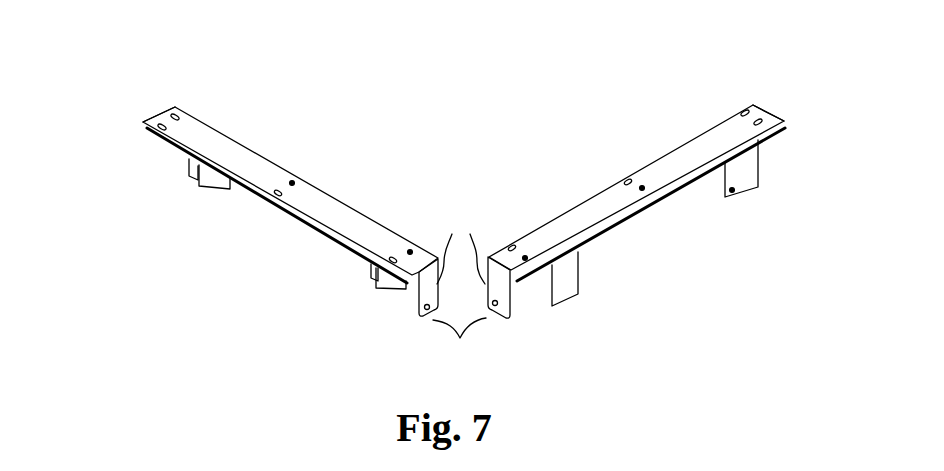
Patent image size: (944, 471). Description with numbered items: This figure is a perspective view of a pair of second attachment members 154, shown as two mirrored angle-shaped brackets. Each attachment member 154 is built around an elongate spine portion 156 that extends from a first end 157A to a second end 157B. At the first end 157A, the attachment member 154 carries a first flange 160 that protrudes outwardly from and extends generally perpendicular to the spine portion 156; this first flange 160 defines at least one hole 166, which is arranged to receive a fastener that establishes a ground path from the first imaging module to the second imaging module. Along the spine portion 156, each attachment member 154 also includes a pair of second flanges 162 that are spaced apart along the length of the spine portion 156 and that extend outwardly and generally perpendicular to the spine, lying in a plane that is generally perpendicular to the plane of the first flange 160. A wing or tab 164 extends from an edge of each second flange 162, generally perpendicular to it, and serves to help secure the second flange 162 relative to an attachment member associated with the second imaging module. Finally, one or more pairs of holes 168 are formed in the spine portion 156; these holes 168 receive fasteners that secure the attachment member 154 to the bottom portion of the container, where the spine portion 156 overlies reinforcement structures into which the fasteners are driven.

The attachment member 154 is at (265, 153).
The spine portion 156 is at (337, 208).
The first end 157A is at (418, 305).
The second end 157B is at (142, 125).
The first flange 160 is at (461, 249).
The second flange 162 is at (216, 184).
The tab 164 is at (190, 172).
The hole 166 is at (459, 342).
The holes 168 is at (174, 115).